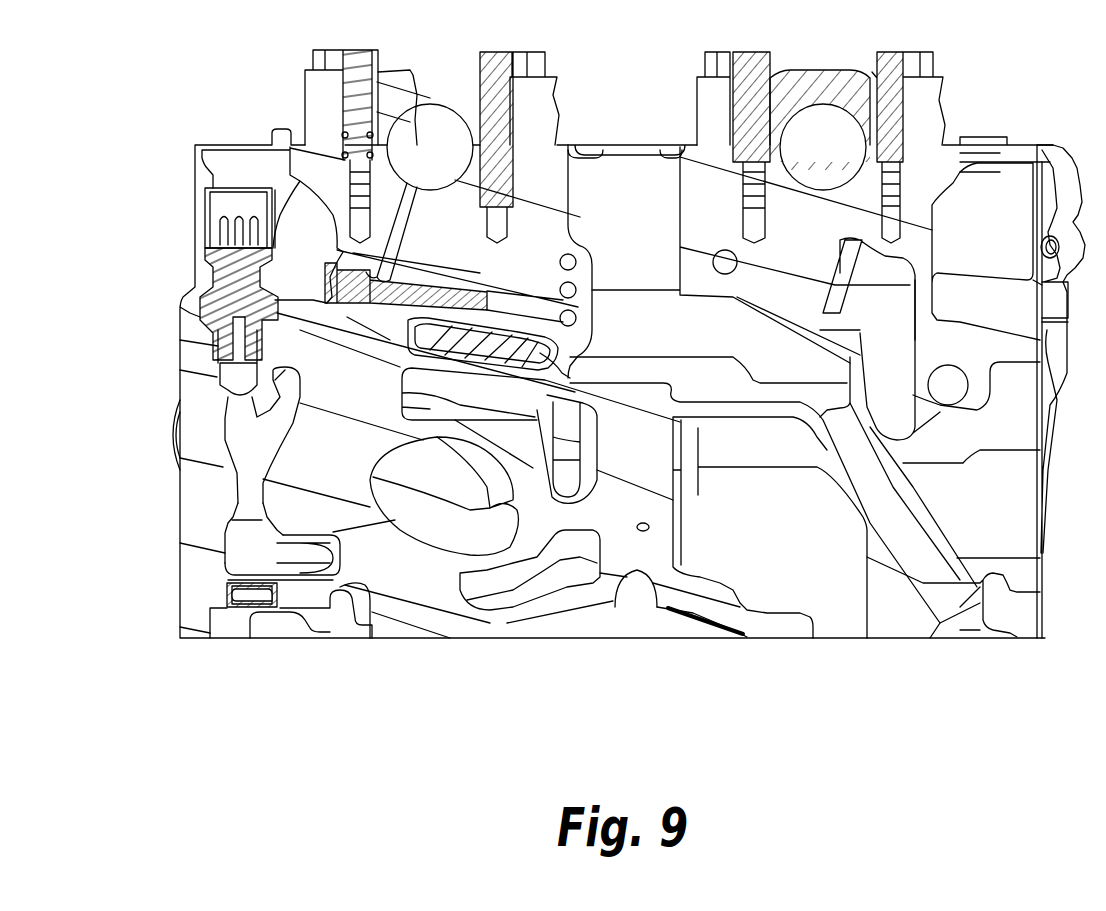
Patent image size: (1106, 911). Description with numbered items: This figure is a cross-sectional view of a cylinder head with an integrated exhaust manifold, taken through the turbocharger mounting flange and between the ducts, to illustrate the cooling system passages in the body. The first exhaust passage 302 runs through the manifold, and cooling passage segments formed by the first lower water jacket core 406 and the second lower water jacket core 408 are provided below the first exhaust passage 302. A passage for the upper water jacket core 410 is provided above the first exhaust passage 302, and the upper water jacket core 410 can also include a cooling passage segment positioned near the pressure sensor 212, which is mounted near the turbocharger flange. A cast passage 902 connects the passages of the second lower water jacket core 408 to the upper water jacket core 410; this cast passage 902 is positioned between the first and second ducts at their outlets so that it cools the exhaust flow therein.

The pressure sensor 212 is at (223, 252).
The first exhaust passage 302 is at (400, 510).
The first lower water jacket core 406 is at (517, 600).
The second lower water jacket core 408 is at (243, 550).
The upper water jacket core 410 is at (240, 430).
The cast passage 902 is at (247, 507).